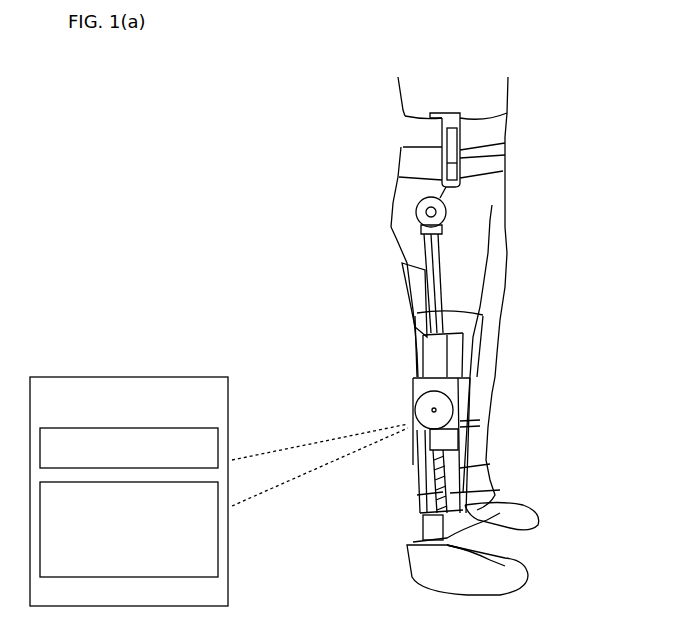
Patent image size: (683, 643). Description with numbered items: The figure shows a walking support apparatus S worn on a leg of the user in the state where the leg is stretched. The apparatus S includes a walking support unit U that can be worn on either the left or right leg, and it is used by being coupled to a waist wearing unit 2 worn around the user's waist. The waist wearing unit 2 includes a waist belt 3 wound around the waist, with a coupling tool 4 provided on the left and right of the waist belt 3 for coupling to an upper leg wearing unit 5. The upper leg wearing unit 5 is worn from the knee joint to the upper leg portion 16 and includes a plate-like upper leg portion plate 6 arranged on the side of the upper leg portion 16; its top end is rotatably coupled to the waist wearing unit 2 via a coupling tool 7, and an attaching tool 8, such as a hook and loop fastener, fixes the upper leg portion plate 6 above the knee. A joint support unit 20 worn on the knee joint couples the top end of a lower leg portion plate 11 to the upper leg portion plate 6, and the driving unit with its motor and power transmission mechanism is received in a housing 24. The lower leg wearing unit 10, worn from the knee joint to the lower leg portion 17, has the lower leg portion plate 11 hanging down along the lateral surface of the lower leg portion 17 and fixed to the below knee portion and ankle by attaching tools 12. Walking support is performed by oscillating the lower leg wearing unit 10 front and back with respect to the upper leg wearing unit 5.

The waist wearing unit 2 is at (388, 124).
The waist belt 3 is at (513, 123).
The coupling tool 4 is at (468, 162).
The coupling tool 7 is at (416, 206).
The upper leg wearing unit 5 is at (412, 265).
The upper leg portion 16 is at (410, 303).
The upper leg portion plate 6 is at (450, 311).
The attaching tool 8 is at (480, 370).
The housing 24 is at (412, 395).
The joint support unit 20 is at (398, 408).
The attaching tool 12 is at (479, 423).
The lower leg wearing unit 10 is at (480, 462).
The lower leg portion 17 is at (433, 462).
The lower leg portion plate 11 is at (413, 492).
The walking support apparatus S is at (290, 201).
The walking support unit U is at (335, 330).